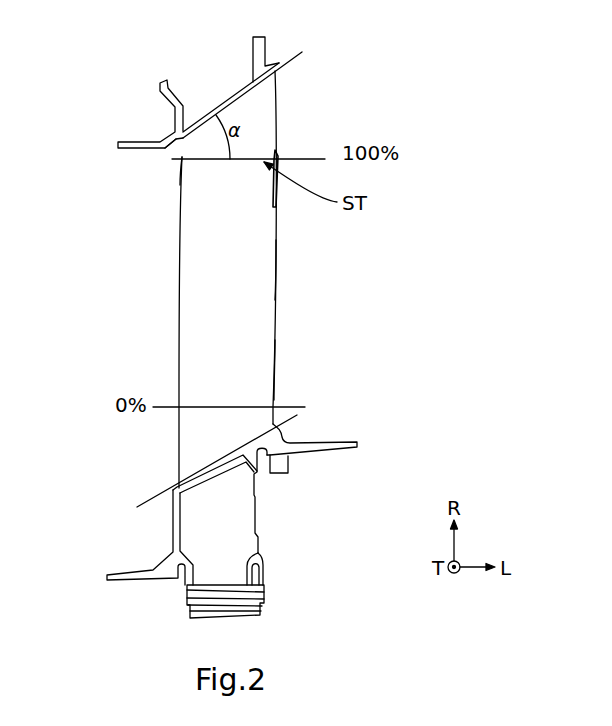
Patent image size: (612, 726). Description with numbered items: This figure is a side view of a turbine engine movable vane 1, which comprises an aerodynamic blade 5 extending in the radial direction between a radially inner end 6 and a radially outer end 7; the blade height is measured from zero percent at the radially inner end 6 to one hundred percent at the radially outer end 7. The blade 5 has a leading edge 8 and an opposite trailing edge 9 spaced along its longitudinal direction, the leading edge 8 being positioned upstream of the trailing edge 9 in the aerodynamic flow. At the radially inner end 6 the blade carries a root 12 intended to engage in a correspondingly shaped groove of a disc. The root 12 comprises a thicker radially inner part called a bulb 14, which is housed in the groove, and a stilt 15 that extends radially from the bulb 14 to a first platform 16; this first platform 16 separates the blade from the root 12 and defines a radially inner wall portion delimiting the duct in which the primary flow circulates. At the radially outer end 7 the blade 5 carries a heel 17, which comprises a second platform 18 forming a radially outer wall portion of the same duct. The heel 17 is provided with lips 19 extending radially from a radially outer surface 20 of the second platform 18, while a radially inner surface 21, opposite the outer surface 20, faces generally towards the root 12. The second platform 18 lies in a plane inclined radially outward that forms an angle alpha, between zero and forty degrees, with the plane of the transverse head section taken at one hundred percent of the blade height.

The turbine engine movable vane 1 is at (424, 265).
The aerodynamic blade 5 is at (263, 266).
The radially inner end 6 is at (263, 370).
The radially outer end 7 is at (182, 167).
The leading edge 8 is at (179, 316).
The trailing edge 9 is at (273, 325).
The root 12 is at (274, 532).
The bulb 14 is at (263, 589).
The stilt 15 is at (190, 522).
The first platform 16 is at (278, 426).
The heel 17 is at (383, 118).
The second platform 18 is at (241, 99).
The lips 19 is at (277, 36).
The radially outer surface 20 is at (224, 102).
The radially inner surface 21 is at (196, 134).